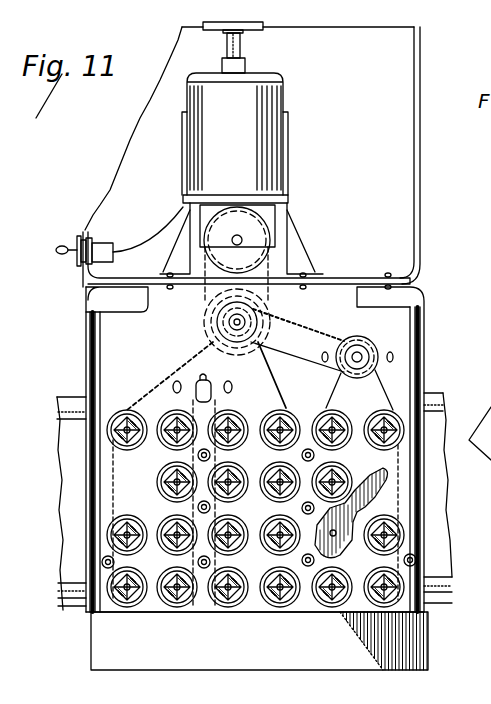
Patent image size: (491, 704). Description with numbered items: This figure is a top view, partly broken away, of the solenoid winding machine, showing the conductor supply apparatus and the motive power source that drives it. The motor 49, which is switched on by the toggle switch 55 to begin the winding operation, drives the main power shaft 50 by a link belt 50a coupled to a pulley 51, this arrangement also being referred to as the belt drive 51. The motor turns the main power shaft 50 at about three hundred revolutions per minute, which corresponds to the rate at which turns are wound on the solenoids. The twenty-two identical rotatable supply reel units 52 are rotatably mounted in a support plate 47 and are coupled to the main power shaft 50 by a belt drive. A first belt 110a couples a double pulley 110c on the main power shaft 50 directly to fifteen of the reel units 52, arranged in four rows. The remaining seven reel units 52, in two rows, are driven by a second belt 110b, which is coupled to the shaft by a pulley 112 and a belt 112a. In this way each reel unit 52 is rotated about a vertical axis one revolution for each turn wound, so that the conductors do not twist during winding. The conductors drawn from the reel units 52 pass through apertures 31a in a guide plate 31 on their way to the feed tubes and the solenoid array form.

The motor 49 is at (240, 146).
The toggle switch 55 is at (66, 266).
The main power shaft 50 is at (252, 318).
The link belt 50a is at (203, 290).
The pulley 51 is at (204, 327).
The pulley 112 is at (371, 352).
The belt 112a is at (314, 333).
The first belt 110a is at (158, 384).
The second belt 110b is at (392, 378).
The double pulley 110c is at (226, 348).
The rotatable supply reel units 52 is at (381, 425).
The guide plate 31 is at (325, 666).
The apertures 31a is at (336, 535).
The support plate 47 is at (263, 628).